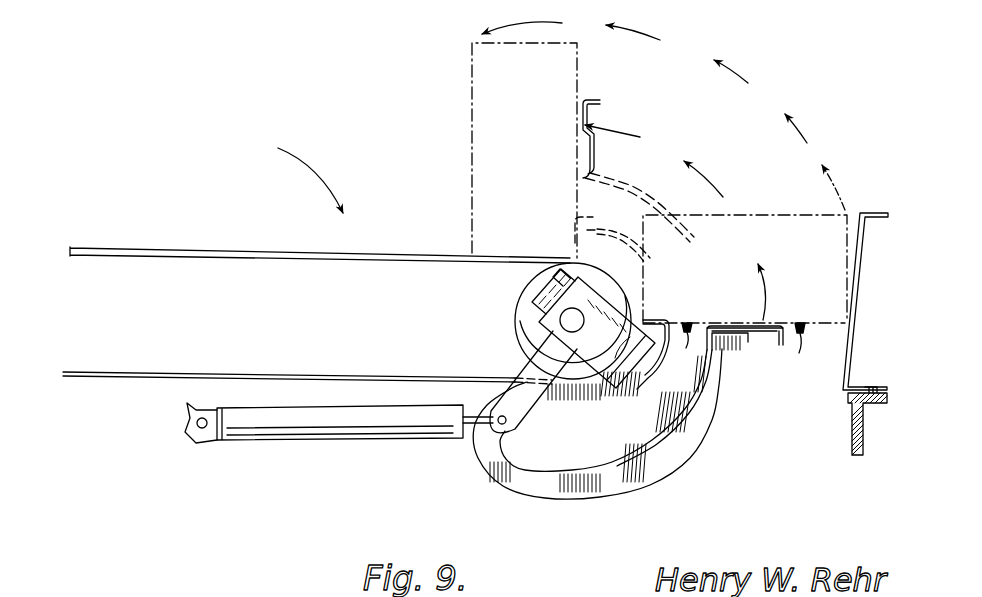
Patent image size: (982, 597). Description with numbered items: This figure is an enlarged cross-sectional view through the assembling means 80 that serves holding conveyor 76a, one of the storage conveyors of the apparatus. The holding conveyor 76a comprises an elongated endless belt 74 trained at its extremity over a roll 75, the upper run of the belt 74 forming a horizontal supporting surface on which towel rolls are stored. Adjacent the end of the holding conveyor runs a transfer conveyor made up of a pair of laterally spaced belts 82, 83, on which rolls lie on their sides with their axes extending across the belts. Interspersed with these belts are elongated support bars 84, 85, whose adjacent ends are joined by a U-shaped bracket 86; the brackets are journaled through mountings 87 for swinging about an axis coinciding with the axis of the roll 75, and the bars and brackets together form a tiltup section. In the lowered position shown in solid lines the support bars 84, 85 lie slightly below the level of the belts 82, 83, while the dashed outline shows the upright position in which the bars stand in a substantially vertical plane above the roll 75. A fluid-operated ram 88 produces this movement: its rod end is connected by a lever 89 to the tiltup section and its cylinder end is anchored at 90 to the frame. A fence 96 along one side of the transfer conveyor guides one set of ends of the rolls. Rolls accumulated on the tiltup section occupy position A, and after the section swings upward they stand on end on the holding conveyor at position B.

The belt 74 is at (382, 262).
The roll 75 is at (513, 310).
The holding conveyor 76a is at (282, 145).
The assembling means 80 is at (724, 418).
The belt 82 is at (679, 350).
The belt 83 is at (807, 351).
The support bar 84 is at (655, 320).
The support bar 85 is at (742, 325).
The U-shaped bracket 86 is at (528, 490).
The mounting 87 is at (620, 350).
The fluid-operated ram 88 is at (362, 452).
The lever 89 is at (550, 372).
The anchor 90 is at (200, 443).
The fence 96 is at (852, 343).
The roll position on tiltup section A is at (733, 215).
The roll position on holding conveyor B is at (472, 115).